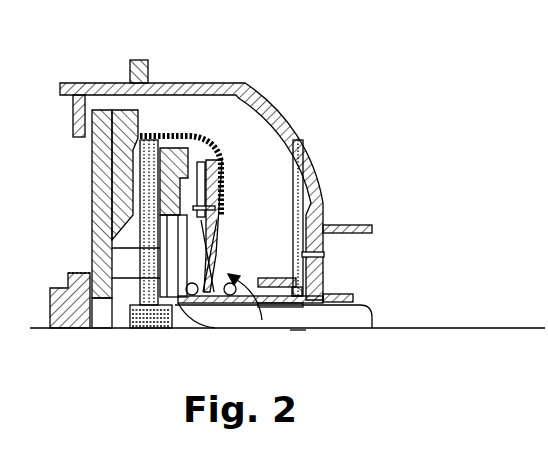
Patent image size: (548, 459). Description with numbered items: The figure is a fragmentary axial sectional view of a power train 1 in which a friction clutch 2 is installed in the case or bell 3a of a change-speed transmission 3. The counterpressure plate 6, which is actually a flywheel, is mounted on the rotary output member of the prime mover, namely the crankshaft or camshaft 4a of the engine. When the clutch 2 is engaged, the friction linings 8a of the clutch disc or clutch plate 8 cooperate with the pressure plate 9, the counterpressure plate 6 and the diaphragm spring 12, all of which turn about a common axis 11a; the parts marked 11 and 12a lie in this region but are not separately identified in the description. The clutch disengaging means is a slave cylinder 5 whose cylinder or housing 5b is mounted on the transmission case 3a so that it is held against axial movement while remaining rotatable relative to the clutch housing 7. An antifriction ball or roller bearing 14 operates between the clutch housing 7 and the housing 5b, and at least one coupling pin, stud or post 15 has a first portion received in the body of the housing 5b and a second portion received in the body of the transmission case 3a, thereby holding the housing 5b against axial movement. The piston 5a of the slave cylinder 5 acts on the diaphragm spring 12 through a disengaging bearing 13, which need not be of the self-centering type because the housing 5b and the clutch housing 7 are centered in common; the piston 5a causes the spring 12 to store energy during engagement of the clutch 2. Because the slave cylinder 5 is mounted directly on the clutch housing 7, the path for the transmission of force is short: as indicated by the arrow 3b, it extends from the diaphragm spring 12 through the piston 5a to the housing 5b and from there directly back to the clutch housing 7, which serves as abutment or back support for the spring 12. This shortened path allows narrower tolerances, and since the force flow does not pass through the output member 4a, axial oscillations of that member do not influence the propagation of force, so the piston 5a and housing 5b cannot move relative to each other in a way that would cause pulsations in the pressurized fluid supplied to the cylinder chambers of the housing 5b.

The power train 1 is at (316, 66).
The friction clutch 2 is at (212, 162).
The change-speed transmission 3 is at (232, 171).
The transmission case 3a is at (217, 83).
The arrow 3b is at (156, 318).
The crankshaft or camshaft 4a is at (78, 272).
The slave cylinder 5 is at (262, 310).
The piston 5a is at (277, 277).
The housing or cylinder 5b is at (282, 308).
The counterpressure plate 6 is at (89, 186).
The clutch housing 7 is at (155, 140).
The clutch disc 8 is at (140, 292).
The friction linings 8a is at (130, 186).
The pressure plate 9 is at (172, 140).
The base 11 is at (350, 323).
The common axis 11a is at (300, 330).
The diaphragm spring 12 is at (222, 200).
The tube 12a is at (218, 230).
The disengaging bearing 13 is at (227, 310).
The antifriction ball or roller bearing 14 is at (187, 300).
The coupling pin 15 is at (324, 255).